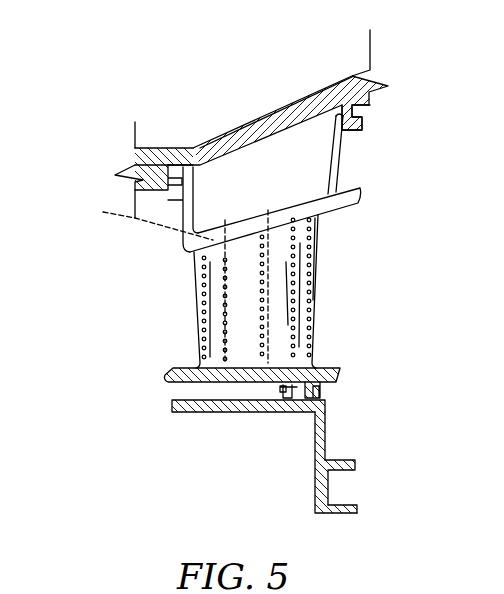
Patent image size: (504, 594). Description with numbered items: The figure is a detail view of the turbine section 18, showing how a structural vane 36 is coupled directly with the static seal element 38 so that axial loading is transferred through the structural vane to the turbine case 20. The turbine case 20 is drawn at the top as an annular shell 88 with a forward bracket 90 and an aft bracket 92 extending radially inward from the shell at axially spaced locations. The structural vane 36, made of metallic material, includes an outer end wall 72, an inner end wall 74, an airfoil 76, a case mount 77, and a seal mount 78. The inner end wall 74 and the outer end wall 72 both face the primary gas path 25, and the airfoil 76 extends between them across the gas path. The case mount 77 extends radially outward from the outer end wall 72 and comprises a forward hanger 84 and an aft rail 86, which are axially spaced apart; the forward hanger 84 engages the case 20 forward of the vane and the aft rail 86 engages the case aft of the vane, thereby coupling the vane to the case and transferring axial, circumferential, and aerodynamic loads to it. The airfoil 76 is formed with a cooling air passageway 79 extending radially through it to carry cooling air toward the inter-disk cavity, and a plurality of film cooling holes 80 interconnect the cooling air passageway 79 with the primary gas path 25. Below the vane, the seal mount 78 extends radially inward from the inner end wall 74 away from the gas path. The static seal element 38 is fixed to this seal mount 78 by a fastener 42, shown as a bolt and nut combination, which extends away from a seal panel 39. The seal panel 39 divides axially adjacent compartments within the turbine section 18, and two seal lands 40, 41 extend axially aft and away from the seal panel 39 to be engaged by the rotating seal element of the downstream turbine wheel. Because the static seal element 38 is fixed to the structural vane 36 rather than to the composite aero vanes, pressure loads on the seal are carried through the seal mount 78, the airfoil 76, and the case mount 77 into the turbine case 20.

The turbine section 18 is at (105, 68).
The turbine case 20 is at (250, 100).
The primary gas path 25 is at (183, 327).
The structural vane 36 is at (148, 295).
The static seal element 38 is at (222, 472).
The seal panel 39 is at (307, 422).
The seal land 40 is at (357, 463).
The seal land 41 is at (357, 507).
The fastener 42 is at (280, 390).
The outer end wall 72 is at (362, 190).
The inner end wall 74 is at (337, 370).
The airfoil 76 is at (322, 287).
The case mount 77 is at (346, 162).
The seal mount 78 is at (322, 375).
The cooling air passageway 79 is at (142, 221).
The film cooling holes 80 is at (197, 337).
The forward hanger 84 is at (202, 180).
The aft rail 86 is at (324, 166).
The annular shell 88 is at (285, 110).
The forward bracket 90 is at (163, 177).
The aft bracket 92 is at (372, 105).